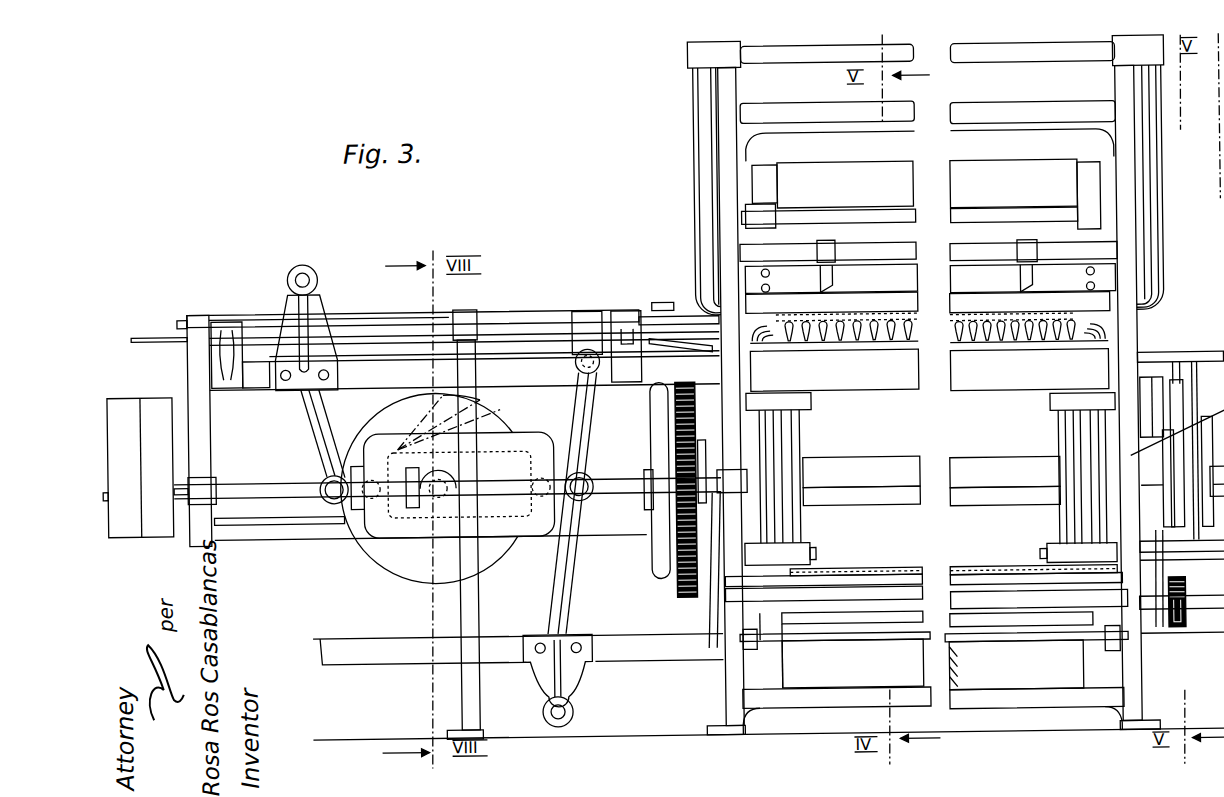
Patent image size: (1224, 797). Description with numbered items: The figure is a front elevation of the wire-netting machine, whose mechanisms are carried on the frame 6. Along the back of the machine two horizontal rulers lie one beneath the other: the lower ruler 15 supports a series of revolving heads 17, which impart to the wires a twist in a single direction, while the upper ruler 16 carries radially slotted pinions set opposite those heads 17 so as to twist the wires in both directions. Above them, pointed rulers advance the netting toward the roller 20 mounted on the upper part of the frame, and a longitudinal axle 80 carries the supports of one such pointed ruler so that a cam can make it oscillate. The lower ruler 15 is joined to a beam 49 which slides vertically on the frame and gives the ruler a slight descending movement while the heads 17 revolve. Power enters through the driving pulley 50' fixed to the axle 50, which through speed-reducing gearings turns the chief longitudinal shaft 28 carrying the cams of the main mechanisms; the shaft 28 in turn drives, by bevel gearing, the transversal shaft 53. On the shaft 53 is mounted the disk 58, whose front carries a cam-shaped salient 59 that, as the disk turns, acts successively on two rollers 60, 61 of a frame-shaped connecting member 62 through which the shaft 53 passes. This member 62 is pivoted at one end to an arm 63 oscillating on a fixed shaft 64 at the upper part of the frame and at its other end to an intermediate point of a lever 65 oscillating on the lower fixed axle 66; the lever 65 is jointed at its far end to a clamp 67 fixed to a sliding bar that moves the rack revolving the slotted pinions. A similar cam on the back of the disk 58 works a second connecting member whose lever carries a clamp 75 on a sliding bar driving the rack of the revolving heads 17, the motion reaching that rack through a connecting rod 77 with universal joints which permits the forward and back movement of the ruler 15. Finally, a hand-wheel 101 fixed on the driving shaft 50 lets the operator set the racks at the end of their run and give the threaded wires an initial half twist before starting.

The frame 6 is at (722, 260).
The lower ruler 15 is at (860, 354).
The upper ruler 16 is at (904, 318).
The revolving heads 17 is at (915, 339).
The roller 20 is at (815, 174).
The chief longitudinal shaft 28 is at (905, 494).
The beam 49 is at (958, 400).
The axle 50 is at (448, 522).
The driving pulley 50' is at (137, 447).
The transversal shaft 53 is at (430, 494).
The disk 58 is at (430, 566).
The salient 59 is at (398, 409).
The roller 60 is at (370, 494).
The roller 61 is at (546, 534).
The connecting member 62 is at (530, 440).
The arm 63 is at (312, 421).
The fixed shaft 64 is at (309, 273).
The lever 65 is at (580, 546).
The lower fixed axle 66 is at (562, 710).
The clamp 67 is at (588, 316).
The clamp 75 is at (475, 402).
The connecting rod 77 is at (677, 338).
The longitudinal axle 80 is at (1060, 214).
The hand-wheel 101 is at (661, 572).